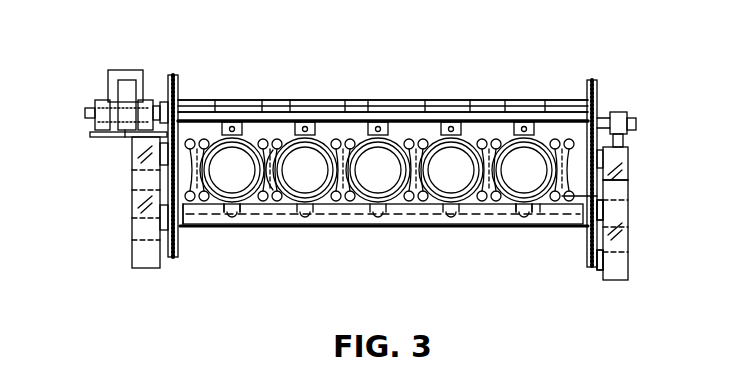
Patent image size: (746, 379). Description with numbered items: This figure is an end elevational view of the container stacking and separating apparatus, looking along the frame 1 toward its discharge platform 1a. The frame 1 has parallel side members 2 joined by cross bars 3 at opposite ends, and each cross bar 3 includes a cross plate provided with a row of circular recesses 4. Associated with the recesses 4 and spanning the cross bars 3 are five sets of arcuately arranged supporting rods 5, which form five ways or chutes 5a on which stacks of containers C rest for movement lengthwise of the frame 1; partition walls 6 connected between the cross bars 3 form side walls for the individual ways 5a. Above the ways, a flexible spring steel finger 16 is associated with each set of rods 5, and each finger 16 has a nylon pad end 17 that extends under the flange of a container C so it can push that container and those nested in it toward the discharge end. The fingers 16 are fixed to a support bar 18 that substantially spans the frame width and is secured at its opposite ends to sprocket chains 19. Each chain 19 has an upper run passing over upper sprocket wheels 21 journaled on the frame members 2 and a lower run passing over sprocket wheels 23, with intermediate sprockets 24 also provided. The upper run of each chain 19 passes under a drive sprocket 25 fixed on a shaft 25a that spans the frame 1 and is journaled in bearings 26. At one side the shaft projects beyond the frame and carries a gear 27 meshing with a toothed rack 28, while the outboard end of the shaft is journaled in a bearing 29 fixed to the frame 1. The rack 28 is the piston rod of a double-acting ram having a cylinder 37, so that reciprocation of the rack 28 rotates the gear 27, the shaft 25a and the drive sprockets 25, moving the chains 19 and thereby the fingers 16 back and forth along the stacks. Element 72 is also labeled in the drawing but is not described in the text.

The frame 1 is at (140, 228).
The discharge platform 1a is at (398, 226).
The side members 2 is at (612, 178).
The cross bars 3 is at (567, 195).
The circular recesses 4 is at (528, 215).
The supporting rods 5 is at (452, 212).
The ways 5a is at (313, 205).
The partition walls 6 is at (455, 145).
The flexible spring steel finger 16 is at (232, 110).
The nylon pad end 17 is at (395, 128).
The support bar 18 is at (246, 102).
The sprocket chains 19 is at (183, 208).
The upper sprocket wheels 21 is at (612, 165).
The sprocket wheels 23 is at (600, 272).
The intermediate sprockets 24 is at (602, 218).
The drive sprocket 25 is at (166, 100).
The shaft 25a is at (85, 112).
The bearings 26 is at (103, 102).
The gear 27 is at (126, 138).
The toothed rack 28 is at (118, 138).
The bearing 29 is at (622, 140).
The cylinder 37 is at (112, 72).
The bracket 72 is at (545, 212).
The containers C is at (282, 150).